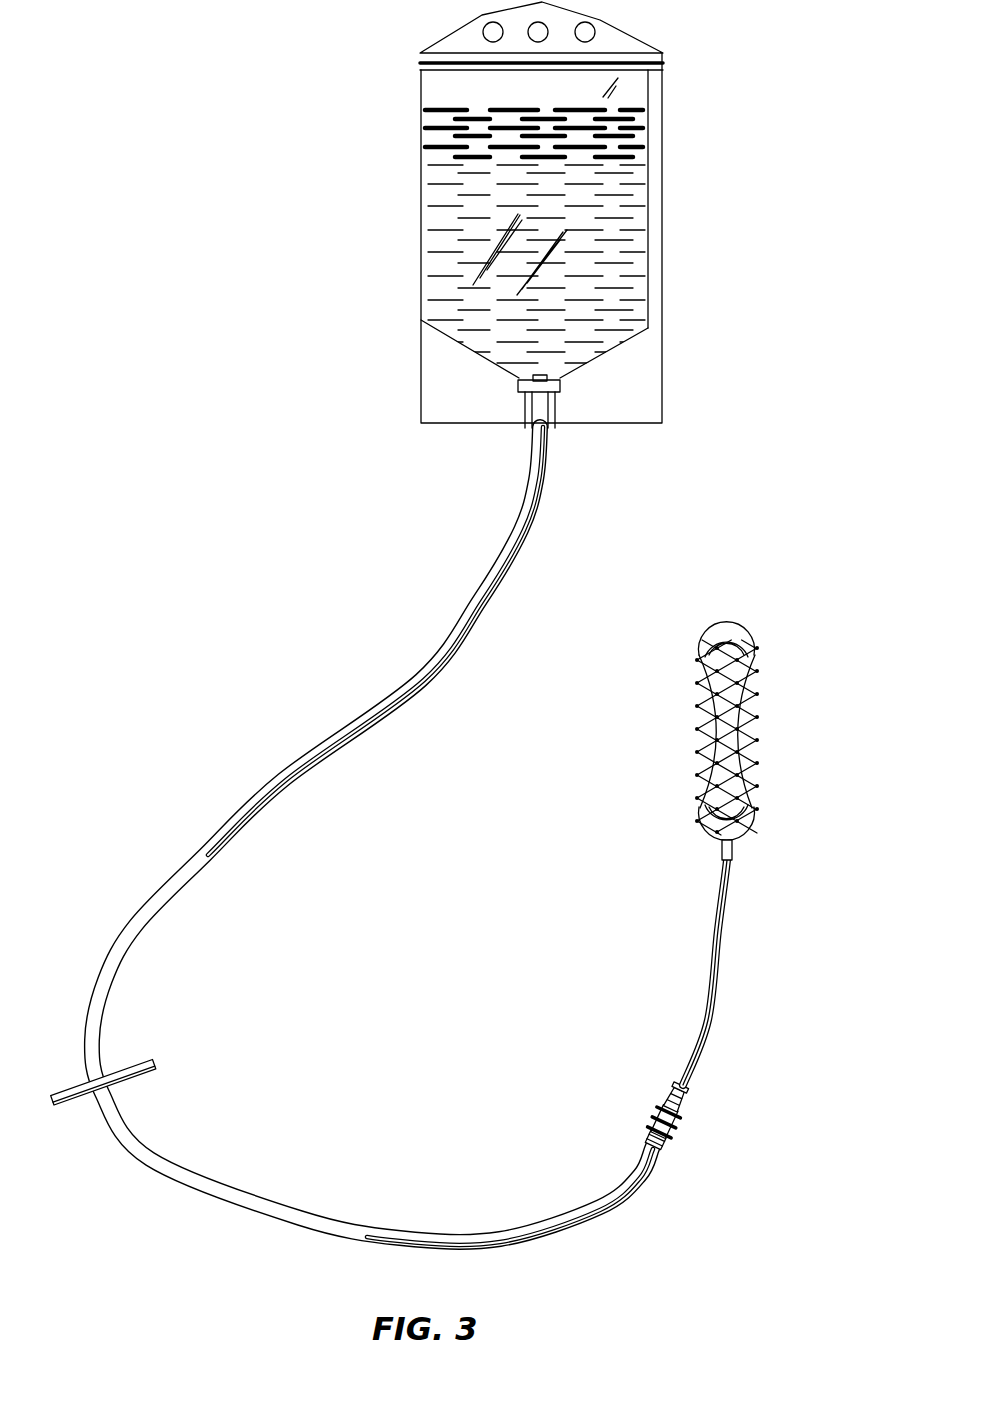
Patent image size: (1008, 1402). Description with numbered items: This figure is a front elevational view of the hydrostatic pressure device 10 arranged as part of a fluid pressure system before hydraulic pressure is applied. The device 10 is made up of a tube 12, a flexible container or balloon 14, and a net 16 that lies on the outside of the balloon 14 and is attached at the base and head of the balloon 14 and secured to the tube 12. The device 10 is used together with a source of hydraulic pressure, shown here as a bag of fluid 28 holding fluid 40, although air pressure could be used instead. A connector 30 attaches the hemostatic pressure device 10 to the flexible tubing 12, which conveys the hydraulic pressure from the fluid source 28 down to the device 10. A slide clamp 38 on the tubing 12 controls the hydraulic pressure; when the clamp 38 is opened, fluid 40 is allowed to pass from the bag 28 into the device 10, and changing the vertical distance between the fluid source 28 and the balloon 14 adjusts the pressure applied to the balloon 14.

The hydrostatic pressure device 10 is at (768, 719).
The tube 12 is at (708, 1022).
The balloon 14 is at (725, 622).
The net 16 is at (757, 690).
The bag of fluid 28 is at (636, 218).
The connector 30 is at (685, 1100).
The slide clamp 38 is at (140, 1068).
The fluid 40 is at (535, 236).